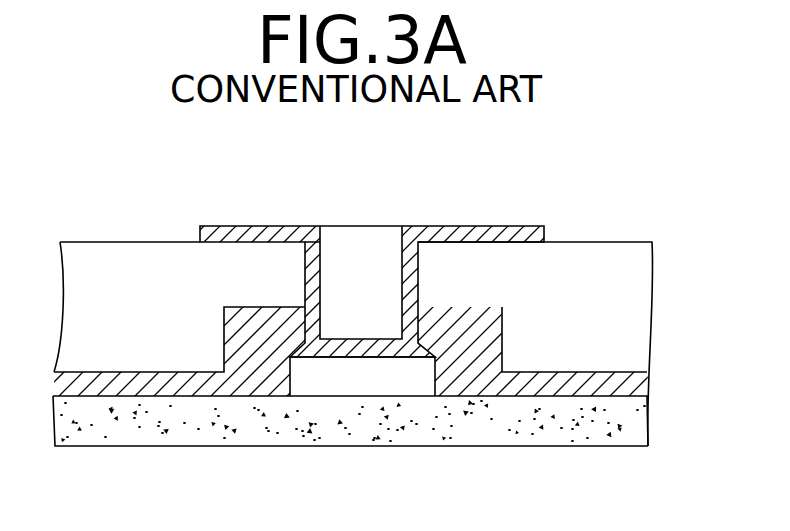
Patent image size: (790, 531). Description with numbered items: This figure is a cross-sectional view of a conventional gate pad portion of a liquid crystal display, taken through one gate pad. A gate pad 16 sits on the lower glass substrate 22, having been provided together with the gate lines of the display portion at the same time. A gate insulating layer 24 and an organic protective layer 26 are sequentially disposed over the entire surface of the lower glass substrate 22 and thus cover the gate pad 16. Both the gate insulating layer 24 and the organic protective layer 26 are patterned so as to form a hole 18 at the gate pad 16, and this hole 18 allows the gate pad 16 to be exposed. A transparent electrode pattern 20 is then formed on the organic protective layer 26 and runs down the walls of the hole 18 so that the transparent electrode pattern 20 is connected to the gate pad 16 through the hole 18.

The gate pad 16 is at (352, 385).
The hole 18 is at (356, 247).
The transparent electrode pattern 20 is at (515, 231).
The lower glass substrate 22 is at (636, 430).
The gate insulating layer 24 is at (640, 392).
The organic protective layer 26 is at (650, 302).